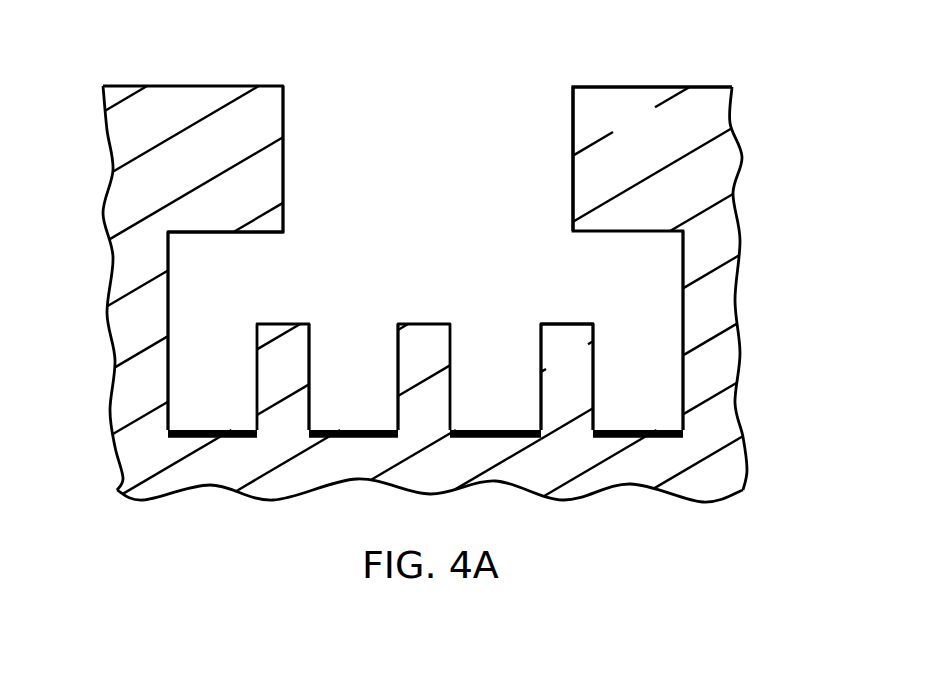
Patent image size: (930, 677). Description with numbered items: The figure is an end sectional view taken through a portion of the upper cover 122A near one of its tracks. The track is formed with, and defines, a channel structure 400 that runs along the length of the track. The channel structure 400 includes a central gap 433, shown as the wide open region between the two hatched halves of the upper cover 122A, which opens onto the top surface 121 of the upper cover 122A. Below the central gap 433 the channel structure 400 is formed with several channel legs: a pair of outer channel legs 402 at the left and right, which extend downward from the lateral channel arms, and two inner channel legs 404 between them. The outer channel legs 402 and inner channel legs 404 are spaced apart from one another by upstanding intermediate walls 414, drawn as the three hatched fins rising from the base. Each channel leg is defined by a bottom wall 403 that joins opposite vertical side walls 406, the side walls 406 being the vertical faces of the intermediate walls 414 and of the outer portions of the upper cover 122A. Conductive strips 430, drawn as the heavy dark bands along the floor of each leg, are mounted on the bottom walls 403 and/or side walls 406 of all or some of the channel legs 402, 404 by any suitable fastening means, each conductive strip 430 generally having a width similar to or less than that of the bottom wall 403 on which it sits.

The channel structure 400 is at (325, 67).
The top surface 121 is at (710, 87).
The upper cover 122A is at (678, 142).
The central gap 433 is at (449, 188).
The outer channel legs 402 is at (220, 350).
The inner channel legs 404 is at (497, 338).
The intermediate walls 414 is at (585, 373).
The side walls 406 is at (309, 362).
The bottom walls 403 is at (343, 429).
The conductive strips 430 is at (503, 438).